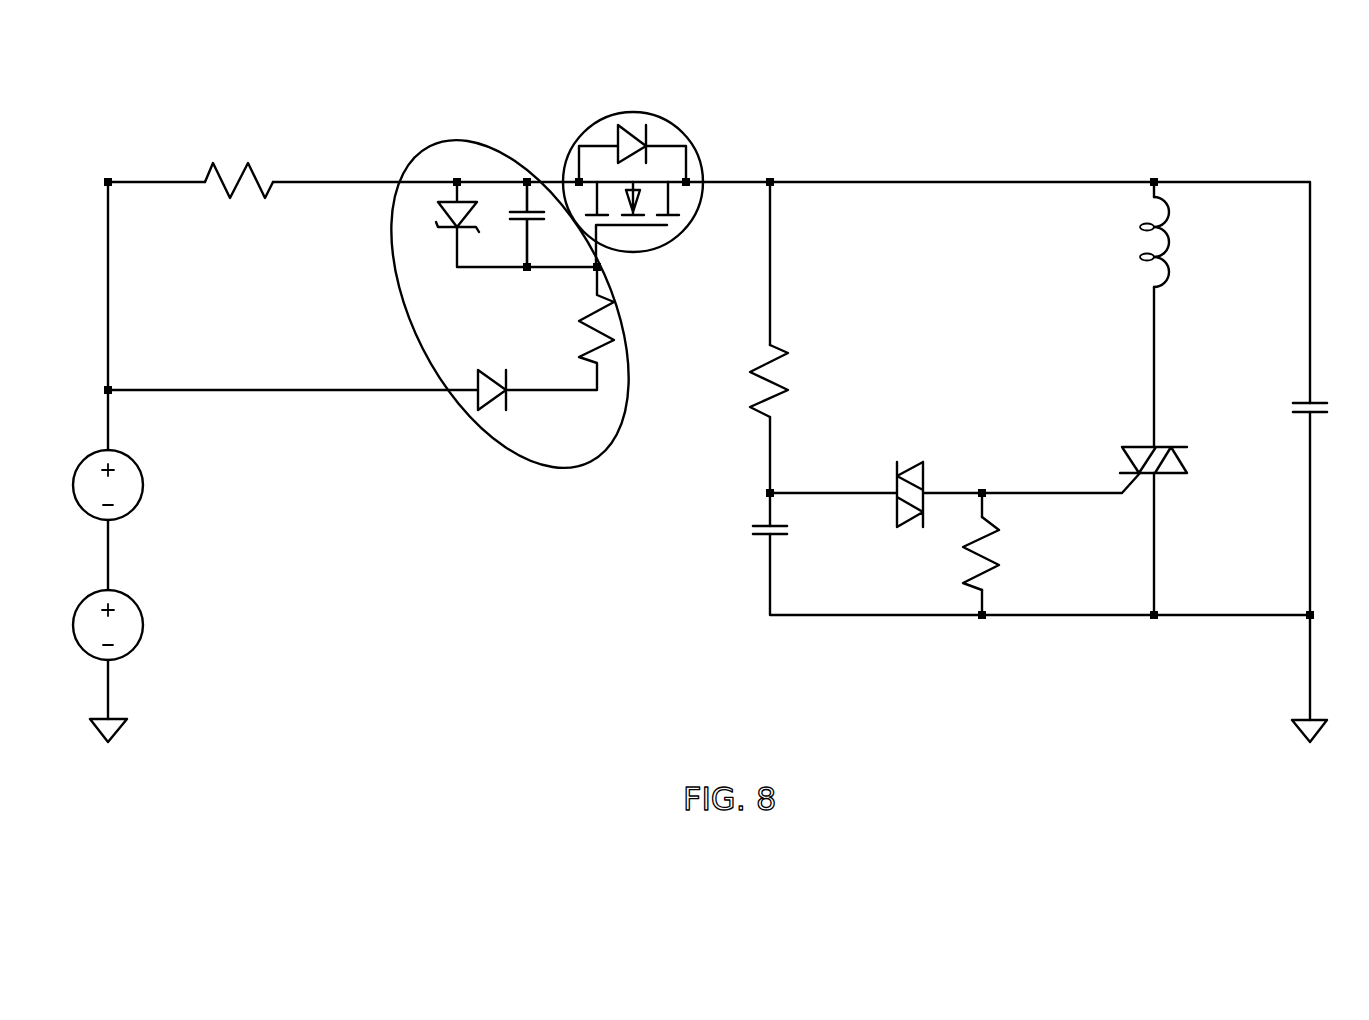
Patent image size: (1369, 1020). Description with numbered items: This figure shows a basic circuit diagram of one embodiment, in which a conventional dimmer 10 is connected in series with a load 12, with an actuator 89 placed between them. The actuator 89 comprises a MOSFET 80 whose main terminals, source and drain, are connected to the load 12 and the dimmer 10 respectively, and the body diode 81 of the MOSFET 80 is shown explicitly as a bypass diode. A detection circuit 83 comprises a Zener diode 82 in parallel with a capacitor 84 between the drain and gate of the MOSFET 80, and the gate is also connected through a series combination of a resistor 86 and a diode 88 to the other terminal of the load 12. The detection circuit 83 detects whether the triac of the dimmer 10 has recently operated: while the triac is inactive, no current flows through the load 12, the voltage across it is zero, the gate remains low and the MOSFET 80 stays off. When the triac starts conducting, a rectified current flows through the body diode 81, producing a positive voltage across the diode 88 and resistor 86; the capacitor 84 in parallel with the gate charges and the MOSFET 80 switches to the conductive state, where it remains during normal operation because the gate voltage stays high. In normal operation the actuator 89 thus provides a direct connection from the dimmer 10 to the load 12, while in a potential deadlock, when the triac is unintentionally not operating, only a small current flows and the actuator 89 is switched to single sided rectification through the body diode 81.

The dimmer 10 is at (958, 360).
The load 12 is at (210, 162).
The MOSFET 80 is at (638, 198).
The body diode 81 is at (632, 130).
The Zener diode 82 is at (443, 195).
The detection circuit 83 is at (448, 403).
The capacitor 84 is at (522, 193).
The resistor 86 is at (602, 345).
The diode 88 is at (507, 407).
The actuator 89 is at (565, 127).